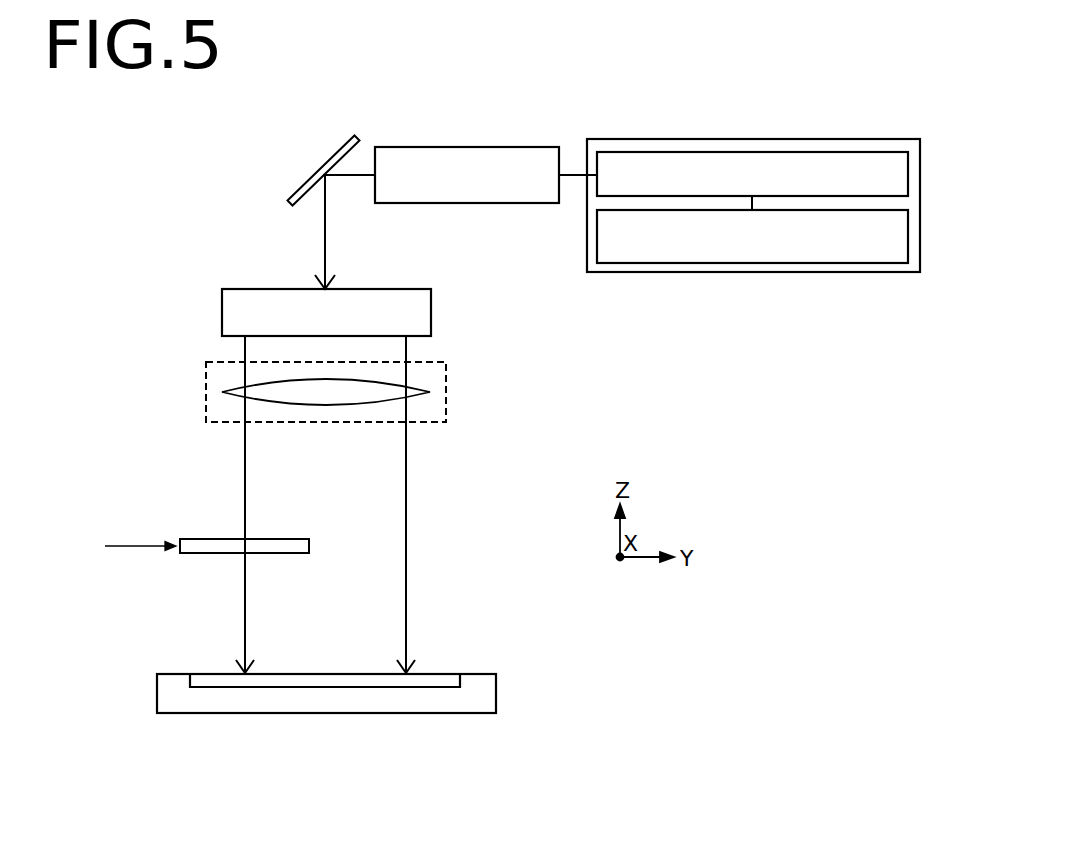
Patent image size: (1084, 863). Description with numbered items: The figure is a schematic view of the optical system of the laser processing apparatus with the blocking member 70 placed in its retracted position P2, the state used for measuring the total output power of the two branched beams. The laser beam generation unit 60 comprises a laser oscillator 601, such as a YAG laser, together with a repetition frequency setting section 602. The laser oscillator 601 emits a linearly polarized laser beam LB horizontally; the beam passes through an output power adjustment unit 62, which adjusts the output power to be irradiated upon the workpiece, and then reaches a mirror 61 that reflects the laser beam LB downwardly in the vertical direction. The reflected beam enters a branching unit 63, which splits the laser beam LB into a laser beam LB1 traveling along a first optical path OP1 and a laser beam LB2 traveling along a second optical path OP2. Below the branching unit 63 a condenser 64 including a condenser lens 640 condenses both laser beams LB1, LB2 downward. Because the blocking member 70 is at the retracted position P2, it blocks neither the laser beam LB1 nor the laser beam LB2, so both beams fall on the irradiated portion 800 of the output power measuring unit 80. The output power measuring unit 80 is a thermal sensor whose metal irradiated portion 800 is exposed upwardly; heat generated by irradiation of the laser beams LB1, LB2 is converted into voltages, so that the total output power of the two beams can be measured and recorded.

The laser beam generation unit 60 is at (774, 245).
The laser oscillator 601 is at (760, 152).
The repetition frequency setting section 602 is at (768, 272).
The mirror 61 is at (338, 150).
The output power adjustment unit 62 is at (470, 147).
The branching unit 63 is at (431, 309).
The condenser 64 is at (398, 366).
The condenser lens 640 is at (417, 385).
The blocking member 70 is at (280, 539).
The output power measuring unit 80 is at (388, 726).
The irradiated portion 800 is at (360, 679).
The laser beam LB is at (325, 237).
The laser beam of the first optical path LB1 is at (244, 597).
The laser beam of the second optical path LB2 is at (406, 593).
The first optical path OP1 is at (244, 452).
The second optical path OP2 is at (406, 475).
The retracted position P2 is at (126, 548).